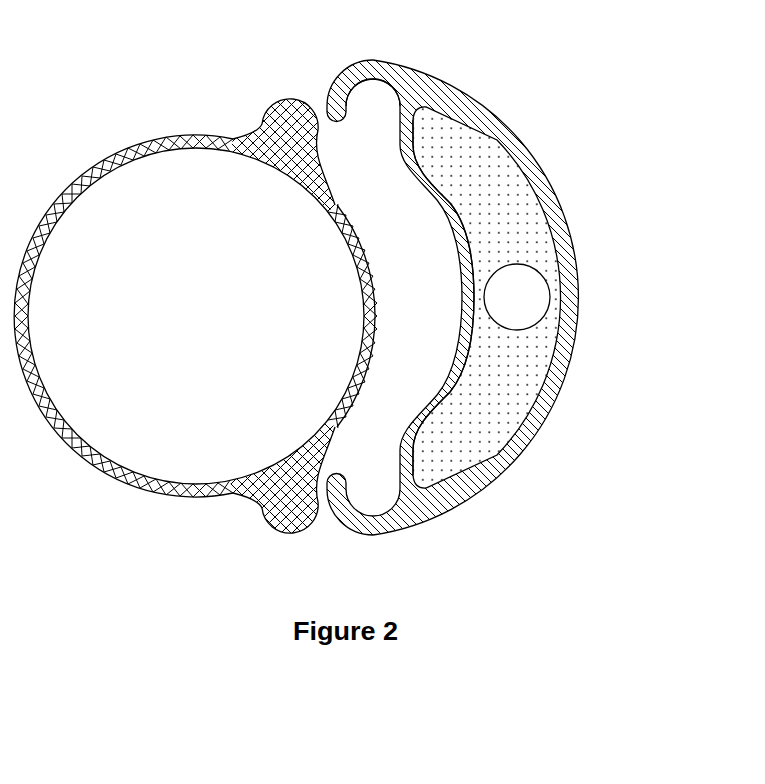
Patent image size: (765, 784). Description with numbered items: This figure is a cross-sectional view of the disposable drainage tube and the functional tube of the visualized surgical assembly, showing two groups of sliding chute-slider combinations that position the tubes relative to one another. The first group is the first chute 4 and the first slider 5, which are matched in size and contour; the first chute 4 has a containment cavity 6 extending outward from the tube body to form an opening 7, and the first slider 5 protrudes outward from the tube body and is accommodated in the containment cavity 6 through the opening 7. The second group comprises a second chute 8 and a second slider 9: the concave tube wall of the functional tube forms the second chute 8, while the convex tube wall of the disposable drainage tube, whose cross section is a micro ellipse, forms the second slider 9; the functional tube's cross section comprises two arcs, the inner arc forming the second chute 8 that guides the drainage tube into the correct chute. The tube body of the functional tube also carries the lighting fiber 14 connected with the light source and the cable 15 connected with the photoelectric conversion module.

The first chute 4 is at (393, 68).
The first slider 5 is at (273, 103).
The containment cavity 6 is at (377, 480).
The opening 7 is at (367, 127).
The second chute 8 is at (445, 273).
The second slider 9 is at (367, 300).
The lighting fiber 14 is at (490, 410).
The cable 15 is at (513, 298).